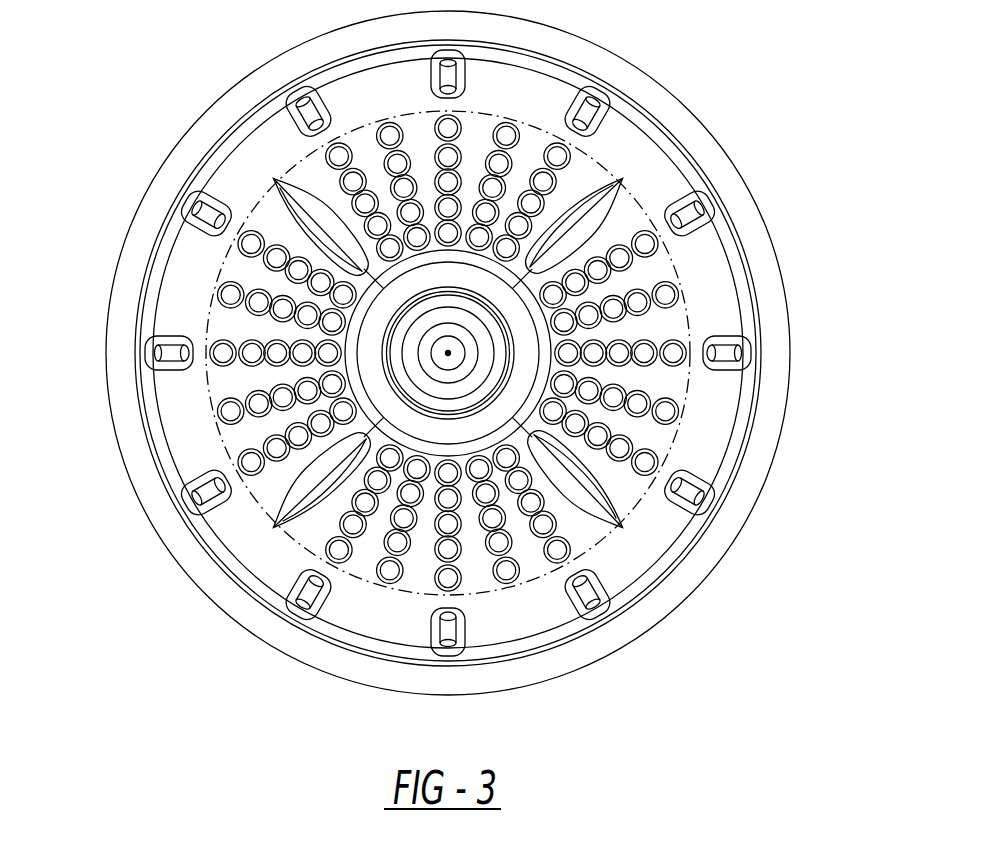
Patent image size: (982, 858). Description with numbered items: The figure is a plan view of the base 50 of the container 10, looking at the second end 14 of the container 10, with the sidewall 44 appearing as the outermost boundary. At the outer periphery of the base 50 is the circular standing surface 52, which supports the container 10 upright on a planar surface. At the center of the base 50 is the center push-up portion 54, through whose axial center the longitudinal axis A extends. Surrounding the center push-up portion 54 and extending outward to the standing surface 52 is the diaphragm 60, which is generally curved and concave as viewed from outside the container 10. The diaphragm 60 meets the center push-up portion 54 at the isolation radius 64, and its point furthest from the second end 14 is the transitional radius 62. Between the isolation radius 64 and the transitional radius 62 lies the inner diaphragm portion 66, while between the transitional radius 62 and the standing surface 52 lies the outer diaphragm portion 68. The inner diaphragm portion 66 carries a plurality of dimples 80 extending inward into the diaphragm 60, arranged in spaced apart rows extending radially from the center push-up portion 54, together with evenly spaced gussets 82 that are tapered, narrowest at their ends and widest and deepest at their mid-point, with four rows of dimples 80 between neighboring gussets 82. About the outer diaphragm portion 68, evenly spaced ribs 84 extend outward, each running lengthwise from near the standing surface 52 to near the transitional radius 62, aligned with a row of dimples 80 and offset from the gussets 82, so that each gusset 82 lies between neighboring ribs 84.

The container 10 is at (143, 103).
The second end 14 is at (523, 660).
The sidewall 44 is at (243, 78).
The base 50 is at (108, 240).
The standing surface 52 is at (162, 487).
The center push-up portion 54 is at (448, 353).
The diaphragm 60 is at (277, 563).
The transitional radius 62 is at (683, 423).
The isolation radius 64 is at (435, 456).
The inner diaphragm portion 66 is at (543, 353).
The outer diaphragm portion 68 is at (508, 383).
The dimples 80 is at (668, 412).
The gussets 82 is at (573, 480).
The ribs 84 is at (580, 595).
The longitudinal axis A is at (448, 353).